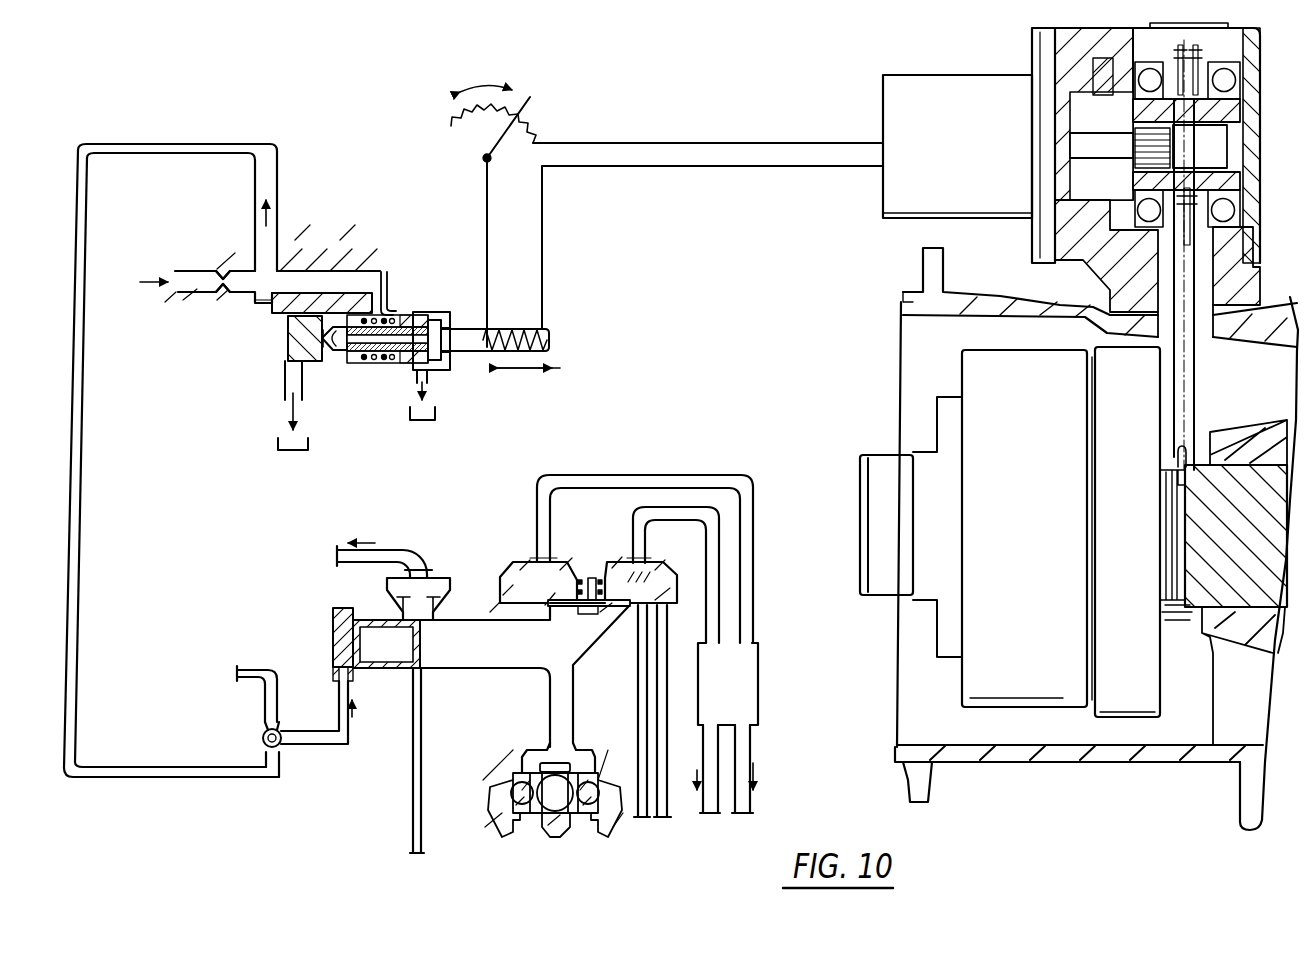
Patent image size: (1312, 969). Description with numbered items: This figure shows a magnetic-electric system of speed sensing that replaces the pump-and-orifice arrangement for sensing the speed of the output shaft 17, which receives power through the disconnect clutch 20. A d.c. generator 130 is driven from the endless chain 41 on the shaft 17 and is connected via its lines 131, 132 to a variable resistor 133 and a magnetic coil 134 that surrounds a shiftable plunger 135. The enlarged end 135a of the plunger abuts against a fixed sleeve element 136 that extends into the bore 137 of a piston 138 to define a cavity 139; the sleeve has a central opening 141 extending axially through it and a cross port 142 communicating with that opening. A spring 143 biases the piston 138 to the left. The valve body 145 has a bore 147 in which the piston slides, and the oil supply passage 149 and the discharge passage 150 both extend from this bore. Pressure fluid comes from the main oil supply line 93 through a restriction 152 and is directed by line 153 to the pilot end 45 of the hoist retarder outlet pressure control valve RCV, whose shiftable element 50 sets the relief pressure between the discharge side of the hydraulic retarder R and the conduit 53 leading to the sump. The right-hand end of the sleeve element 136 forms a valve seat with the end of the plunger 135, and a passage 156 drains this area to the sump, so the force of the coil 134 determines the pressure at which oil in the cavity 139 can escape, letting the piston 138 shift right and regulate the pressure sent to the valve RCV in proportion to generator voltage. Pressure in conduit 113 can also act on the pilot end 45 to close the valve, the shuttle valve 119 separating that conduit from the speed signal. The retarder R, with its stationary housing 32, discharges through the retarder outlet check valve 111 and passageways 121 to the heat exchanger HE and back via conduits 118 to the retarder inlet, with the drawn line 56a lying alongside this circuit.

The main oil supply line 93 is at (182, 285).
The line 153 is at (253, 232).
The restriction 152 is at (220, 278).
The oil supply passage 149 is at (260, 303).
The bore 147 is at (242, 338).
The valve body 145 is at (303, 300).
The piston 138 is at (293, 348).
The central opening 141 is at (403, 333).
The fixed sleeve element 136 is at (413, 363).
The bore 137 is at (337, 332).
The spring 143 is at (377, 363).
The cross port 142 is at (383, 315).
The enlarged end 135a is at (437, 318).
The shiftable plunger 135 is at (550, 339).
The magnetic coil 134 is at (508, 357).
The discharge passage 150 is at (280, 385).
The passage 156 is at (428, 380).
The cavity 139 is at (337, 345).
The variable resistor 133 is at (527, 120).
The line 131 is at (620, 143).
The line 132 is at (648, 167).
The d.c. generator 130 is at (949, 52).
The endless chain 41 is at (1200, 376).
The shaft 17 is at (1248, 556).
The disconnect clutch 20 is at (1020, 716).
The shuttle valve 119 is at (262, 739).
The conduit 113 is at (258, 668).
The hoist retarder outlet pressure control valve RCV is at (333, 606).
The pilot end 45 is at (345, 628).
The shiftable element 50 is at (389, 606).
The conduit 53 is at (398, 552).
The passageways 121 is at (608, 506).
The retarder outlet check valve 111 is at (622, 600).
The pipe 56a is at (660, 756).
The heat exchanger HE is at (748, 689).
The conduits 118 is at (747, 807).
The stationary housing 32 is at (610, 775).
The hydraulic retarder R is at (582, 748).